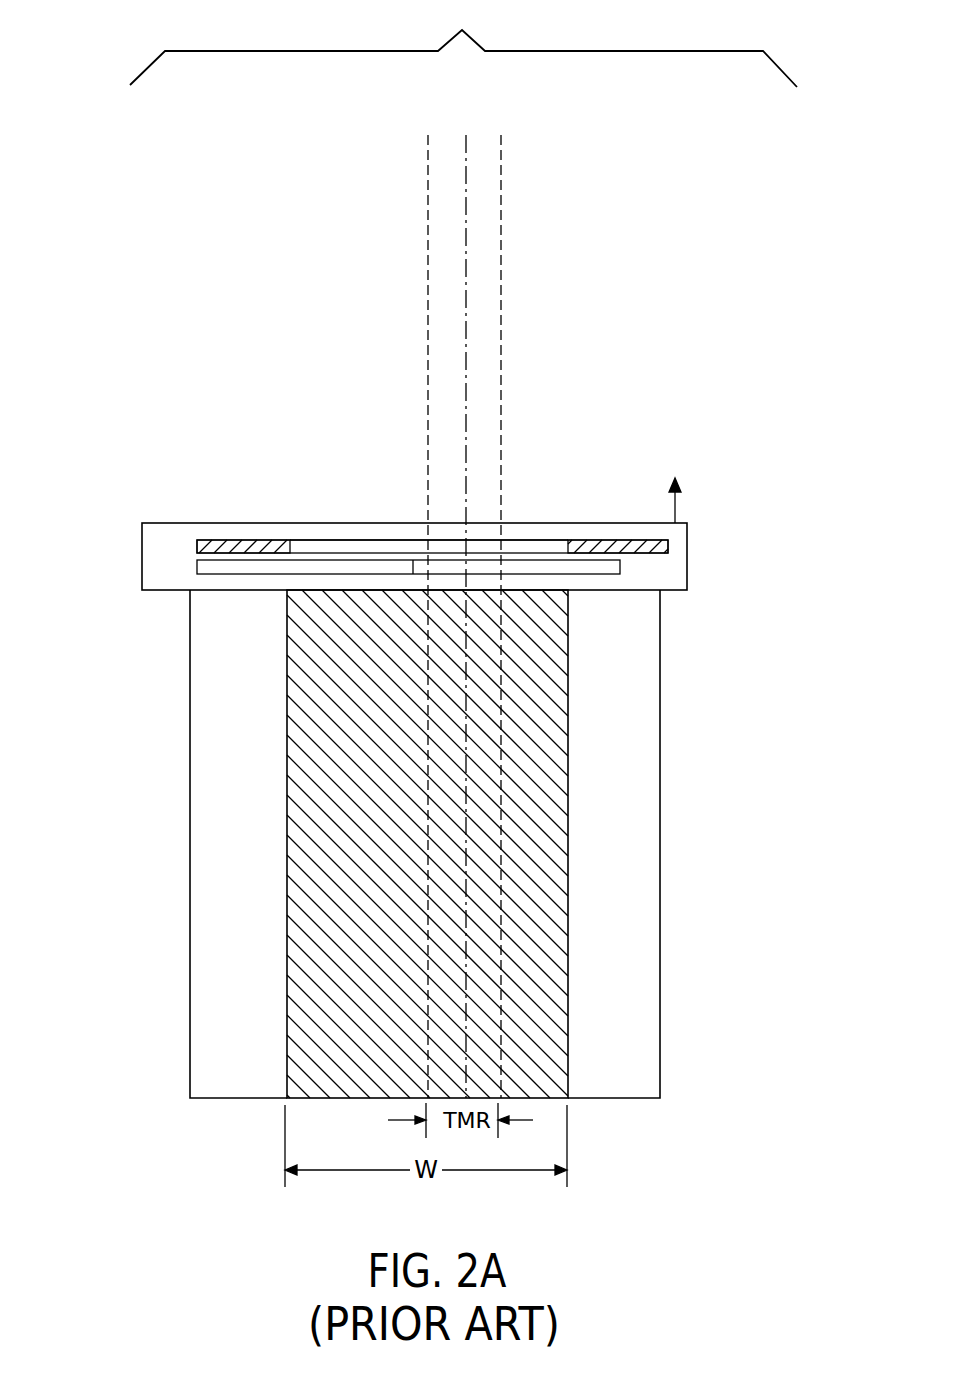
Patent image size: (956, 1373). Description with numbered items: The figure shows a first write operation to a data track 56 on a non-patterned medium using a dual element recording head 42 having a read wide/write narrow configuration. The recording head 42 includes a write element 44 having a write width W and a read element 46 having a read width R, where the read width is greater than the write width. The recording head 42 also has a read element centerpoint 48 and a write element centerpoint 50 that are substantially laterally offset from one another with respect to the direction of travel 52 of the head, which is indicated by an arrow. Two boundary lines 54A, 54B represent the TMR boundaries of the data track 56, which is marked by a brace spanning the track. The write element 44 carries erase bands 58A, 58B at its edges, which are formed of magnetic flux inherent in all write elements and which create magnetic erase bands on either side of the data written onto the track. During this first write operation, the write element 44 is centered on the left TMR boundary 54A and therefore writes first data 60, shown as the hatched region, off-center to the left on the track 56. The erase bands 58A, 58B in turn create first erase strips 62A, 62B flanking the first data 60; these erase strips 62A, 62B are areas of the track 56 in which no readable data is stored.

The dual element recording head 42 is at (688, 548).
The write element 44 is at (333, 540).
The read element 46 is at (197, 565).
The read element centerpoint 48 is at (413, 575).
The write element centerpoint 50 is at (427, 538).
The direction of travel 52 is at (687, 483).
The left TMR boundary line 54A is at (430, 177).
The right TMR boundary line 54B is at (502, 177).
The data track 56 is at (463, 43).
The first erase band 58A is at (252, 538).
The second erase band 58B is at (610, 540).
The first data 60 is at (552, 857).
The first erase strip 62A is at (220, 762).
The second erase strip 62B is at (630, 732).